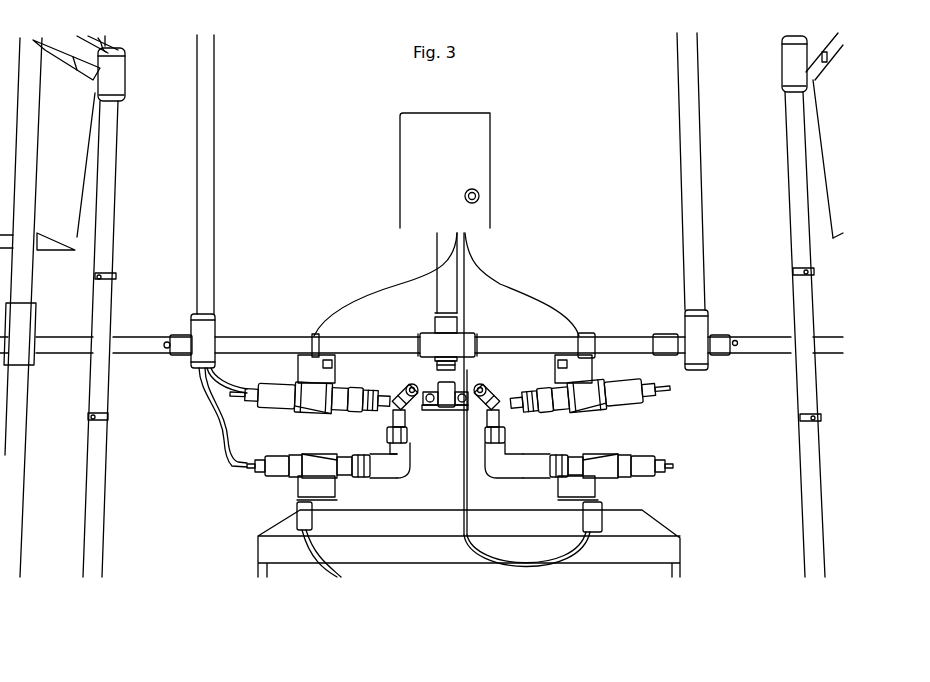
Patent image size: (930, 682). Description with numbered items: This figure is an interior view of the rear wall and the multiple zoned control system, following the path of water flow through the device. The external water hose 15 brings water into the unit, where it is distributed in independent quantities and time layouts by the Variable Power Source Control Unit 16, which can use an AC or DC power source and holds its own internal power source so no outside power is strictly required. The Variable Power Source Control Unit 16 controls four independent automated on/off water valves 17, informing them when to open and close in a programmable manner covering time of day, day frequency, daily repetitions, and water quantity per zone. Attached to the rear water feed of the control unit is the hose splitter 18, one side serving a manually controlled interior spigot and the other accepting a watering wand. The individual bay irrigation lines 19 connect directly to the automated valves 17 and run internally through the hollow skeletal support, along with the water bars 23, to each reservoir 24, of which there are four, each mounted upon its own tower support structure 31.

The external water hose 15 is at (452, 362).
The Variable Power Source Control Unit 16 is at (478, 123).
The automated on/off water valves 17 is at (610, 394).
The hose splitter for watering wand attachment 18 is at (430, 410).
The individual bay Irrigation Lines 19 is at (120, 42).
The water bars 23 is at (214, 82).
The reservoir 24 is at (76, 139).
The tower support structure 31 is at (110, 70).